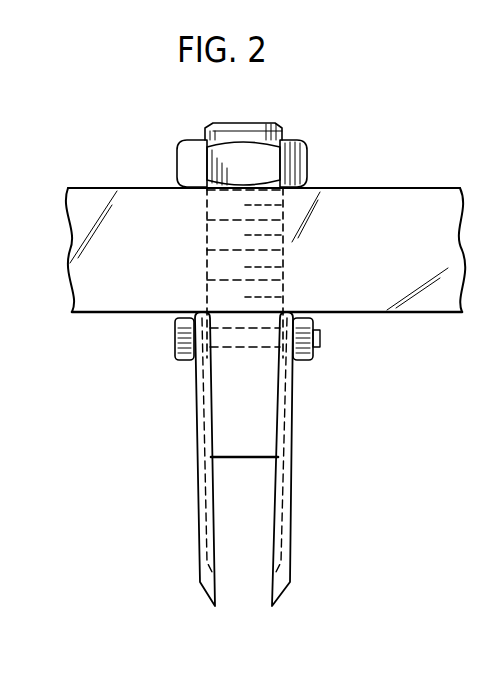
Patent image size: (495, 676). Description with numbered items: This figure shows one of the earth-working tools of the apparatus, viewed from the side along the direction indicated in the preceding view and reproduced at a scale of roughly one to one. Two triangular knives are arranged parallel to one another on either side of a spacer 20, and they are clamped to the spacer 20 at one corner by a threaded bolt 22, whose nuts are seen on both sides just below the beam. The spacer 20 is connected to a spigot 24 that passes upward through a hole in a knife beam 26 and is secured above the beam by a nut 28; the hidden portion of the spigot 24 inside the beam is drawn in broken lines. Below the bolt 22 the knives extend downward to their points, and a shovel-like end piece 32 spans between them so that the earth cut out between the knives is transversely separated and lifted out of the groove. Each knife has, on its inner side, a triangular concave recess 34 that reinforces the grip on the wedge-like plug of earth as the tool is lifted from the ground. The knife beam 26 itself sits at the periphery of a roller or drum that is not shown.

The spacer 20 is at (252, 459).
The threaded bolt 22 is at (176, 333).
The spigot 24 is at (283, 269).
The knife beam 26 is at (423, 201).
The nut 28 is at (306, 142).
The shovel-like end piece 32 is at (241, 460).
The triangular concave recess 34 is at (287, 472).